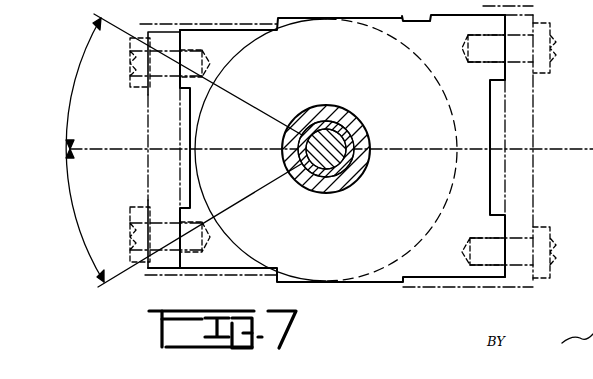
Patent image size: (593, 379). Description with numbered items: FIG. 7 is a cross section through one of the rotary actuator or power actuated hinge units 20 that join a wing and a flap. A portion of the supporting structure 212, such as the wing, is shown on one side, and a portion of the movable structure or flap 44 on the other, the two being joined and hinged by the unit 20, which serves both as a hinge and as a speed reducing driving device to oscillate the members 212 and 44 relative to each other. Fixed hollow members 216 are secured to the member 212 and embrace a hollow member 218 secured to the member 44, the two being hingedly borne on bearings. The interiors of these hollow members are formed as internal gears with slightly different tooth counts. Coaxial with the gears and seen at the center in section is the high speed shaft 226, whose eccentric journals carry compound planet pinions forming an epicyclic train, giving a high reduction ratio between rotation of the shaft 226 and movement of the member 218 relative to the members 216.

The unit 20 is at (343, 283).
The movable structure or flap 44 is at (148, 113).
The supporting structure 212 is at (535, 119).
The fixed hollow member 216 is at (430, 18).
The hollow member 218 is at (203, 30).
The high speed shaft 226 is at (335, 159).